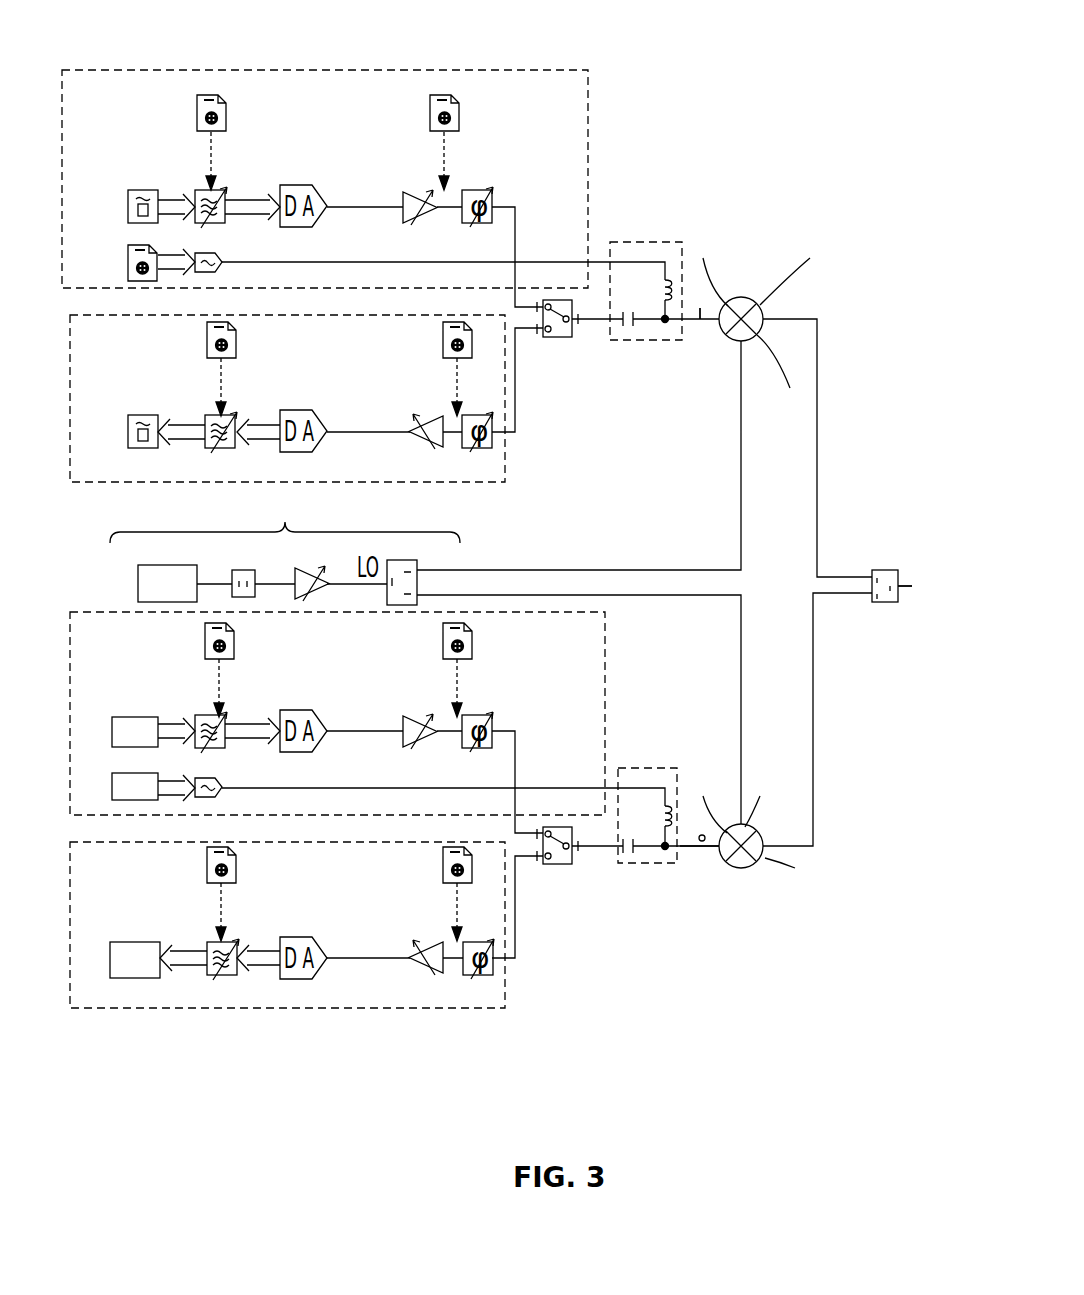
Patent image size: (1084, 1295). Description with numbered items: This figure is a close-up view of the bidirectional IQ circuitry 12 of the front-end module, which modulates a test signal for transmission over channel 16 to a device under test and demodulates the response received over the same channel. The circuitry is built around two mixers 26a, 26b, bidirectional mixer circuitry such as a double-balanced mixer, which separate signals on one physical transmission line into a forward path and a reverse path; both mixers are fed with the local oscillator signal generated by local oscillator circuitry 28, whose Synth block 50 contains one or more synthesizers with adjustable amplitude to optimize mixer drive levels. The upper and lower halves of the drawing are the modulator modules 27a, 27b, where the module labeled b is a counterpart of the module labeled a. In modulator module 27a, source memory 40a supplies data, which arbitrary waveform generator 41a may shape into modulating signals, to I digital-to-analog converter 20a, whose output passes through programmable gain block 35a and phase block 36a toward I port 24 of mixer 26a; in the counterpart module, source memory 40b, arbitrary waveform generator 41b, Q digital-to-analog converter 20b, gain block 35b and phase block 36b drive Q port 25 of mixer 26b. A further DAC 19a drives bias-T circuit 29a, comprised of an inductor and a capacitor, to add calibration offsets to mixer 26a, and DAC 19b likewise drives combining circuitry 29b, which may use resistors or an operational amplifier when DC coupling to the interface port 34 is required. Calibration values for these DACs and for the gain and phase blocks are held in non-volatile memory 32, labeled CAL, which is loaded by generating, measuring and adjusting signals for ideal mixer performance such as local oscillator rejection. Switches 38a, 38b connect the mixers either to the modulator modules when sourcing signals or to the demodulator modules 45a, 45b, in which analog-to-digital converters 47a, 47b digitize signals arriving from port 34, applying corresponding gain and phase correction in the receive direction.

The IQ circuitry 12 is at (878, 166).
The channel 16 is at (905, 577).
The DAC 19a is at (222, 263).
The DAC 19b is at (222, 788).
The I digital-to-analog converter 20a is at (298, 187).
The Q digital-to-analog converter 20b is at (300, 712).
The I port 24 is at (698, 325).
The Q port 25 is at (690, 848).
The mixer circuitry 26a is at (745, 298).
The mixer circuitry 26b is at (745, 868).
The modulator module 27a is at (131, 70).
The modulator module 27b is at (607, 643).
The local oscillator circuitry 28 is at (285, 516).
The bias-T circuit 29a is at (668, 240).
The combining circuitry 29b is at (668, 766).
The non-volatile memory 32 is at (228, 118).
The interface port 34 is at (890, 602).
The programmable gain block 35a is at (410, 193).
The programmable gain block 35b is at (410, 717).
The phase block 36a is at (493, 200).
The phase block 36b is at (493, 726).
The switch 38a is at (560, 340).
The switch 38b is at (560, 866).
The source memory 40a is at (141, 189).
The source memory 40b is at (131, 725).
The arbitrary waveform generator 41a is at (222, 190).
The arbitrary waveform generator 41b is at (222, 717).
The demodulator module 45a is at (505, 455).
The demodulator module 45b is at (505, 1010).
The analog-to-digital converter 47a is at (305, 412).
The analog-to-digital converter 47b is at (302, 940).
The Synth block 50 is at (138, 580).